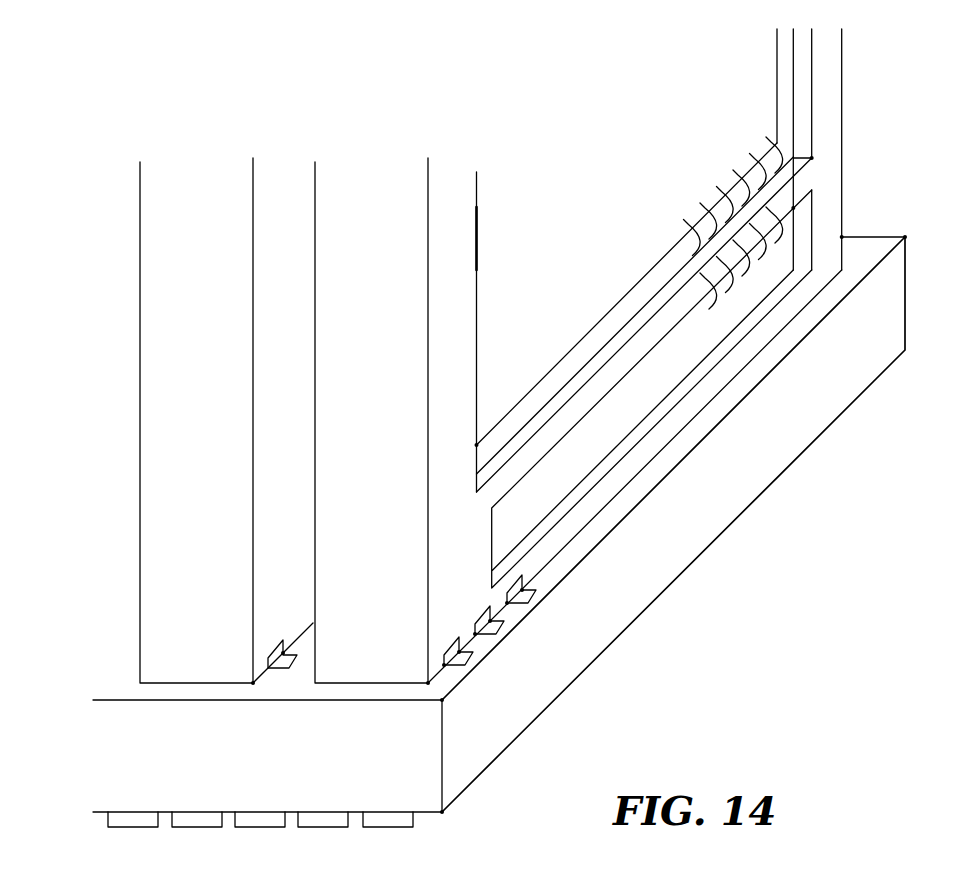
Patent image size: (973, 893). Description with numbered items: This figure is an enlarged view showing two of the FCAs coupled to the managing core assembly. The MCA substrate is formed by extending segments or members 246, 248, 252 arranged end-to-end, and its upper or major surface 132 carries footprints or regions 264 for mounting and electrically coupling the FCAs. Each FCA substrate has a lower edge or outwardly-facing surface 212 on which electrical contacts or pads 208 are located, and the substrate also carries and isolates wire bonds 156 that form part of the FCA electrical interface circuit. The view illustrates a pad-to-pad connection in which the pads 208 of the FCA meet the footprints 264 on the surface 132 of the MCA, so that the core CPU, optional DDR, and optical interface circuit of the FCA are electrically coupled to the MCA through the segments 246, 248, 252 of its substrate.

The upper or major surface 132 is at (567, 557).
The wire bonds 156 is at (793, 213).
The electrical contacts or pads 208 is at (522, 588).
The lower edge or outwardly-facing surface 212 is at (357, 685).
The extending segment or member 246 is at (848, 352).
The extending segment or member 248 is at (860, 240).
The extending segment or member 252 is at (139, 723).
The footprints or regions 264 is at (507, 603).